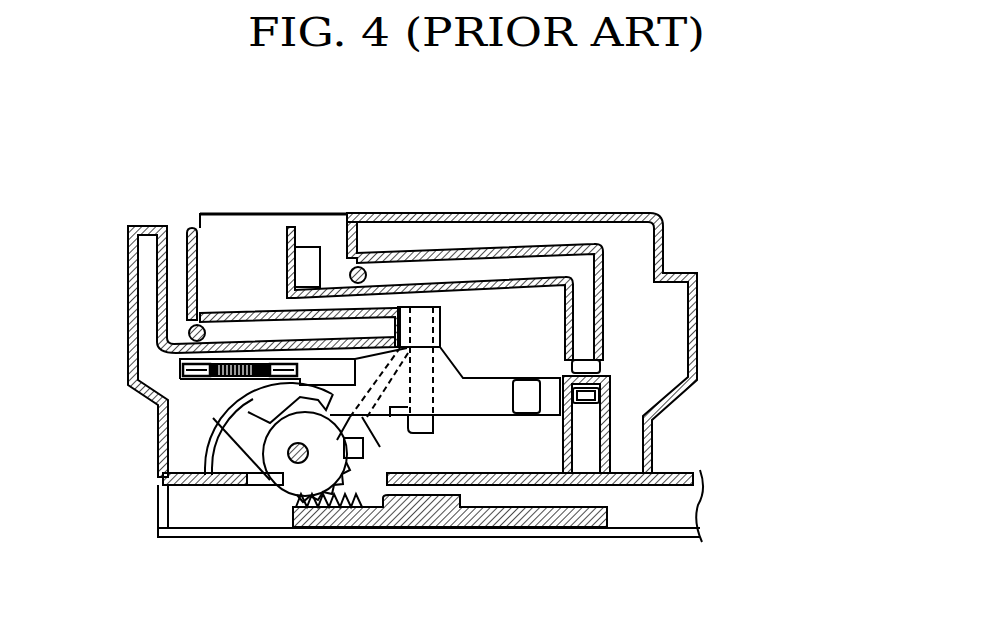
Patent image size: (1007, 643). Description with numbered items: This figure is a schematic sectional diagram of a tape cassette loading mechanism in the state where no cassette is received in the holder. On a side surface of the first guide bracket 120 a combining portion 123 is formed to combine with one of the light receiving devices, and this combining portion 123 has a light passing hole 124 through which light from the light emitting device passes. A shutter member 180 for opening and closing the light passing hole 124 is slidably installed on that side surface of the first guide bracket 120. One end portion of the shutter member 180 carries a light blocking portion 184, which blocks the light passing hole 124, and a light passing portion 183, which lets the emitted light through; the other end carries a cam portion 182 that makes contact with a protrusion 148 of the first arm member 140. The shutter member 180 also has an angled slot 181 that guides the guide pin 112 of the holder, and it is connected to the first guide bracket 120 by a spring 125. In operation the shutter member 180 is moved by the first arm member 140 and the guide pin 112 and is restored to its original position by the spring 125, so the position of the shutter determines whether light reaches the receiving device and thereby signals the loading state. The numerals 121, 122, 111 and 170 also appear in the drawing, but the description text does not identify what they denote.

The first guide bracket 120 is at (707, 190).
The upper cover 121 is at (453, 273).
The side housing 122 is at (177, 287).
The combining portion 123 is at (610, 453).
The light passing hole 124 is at (610, 400).
The spring 125 is at (223, 378).
The screw 111 is at (357, 268).
The guide pin 112 is at (198, 328).
The first arm member 140 is at (262, 458).
The protrusion 148 is at (292, 415).
The rack 170 is at (427, 512).
The shutter member 180 is at (494, 361).
The angled slot 181 is at (413, 433).
The cam portion 182 is at (320, 493).
The light passing portion 183 is at (533, 388).
The light blocking portion 184 is at (594, 388).